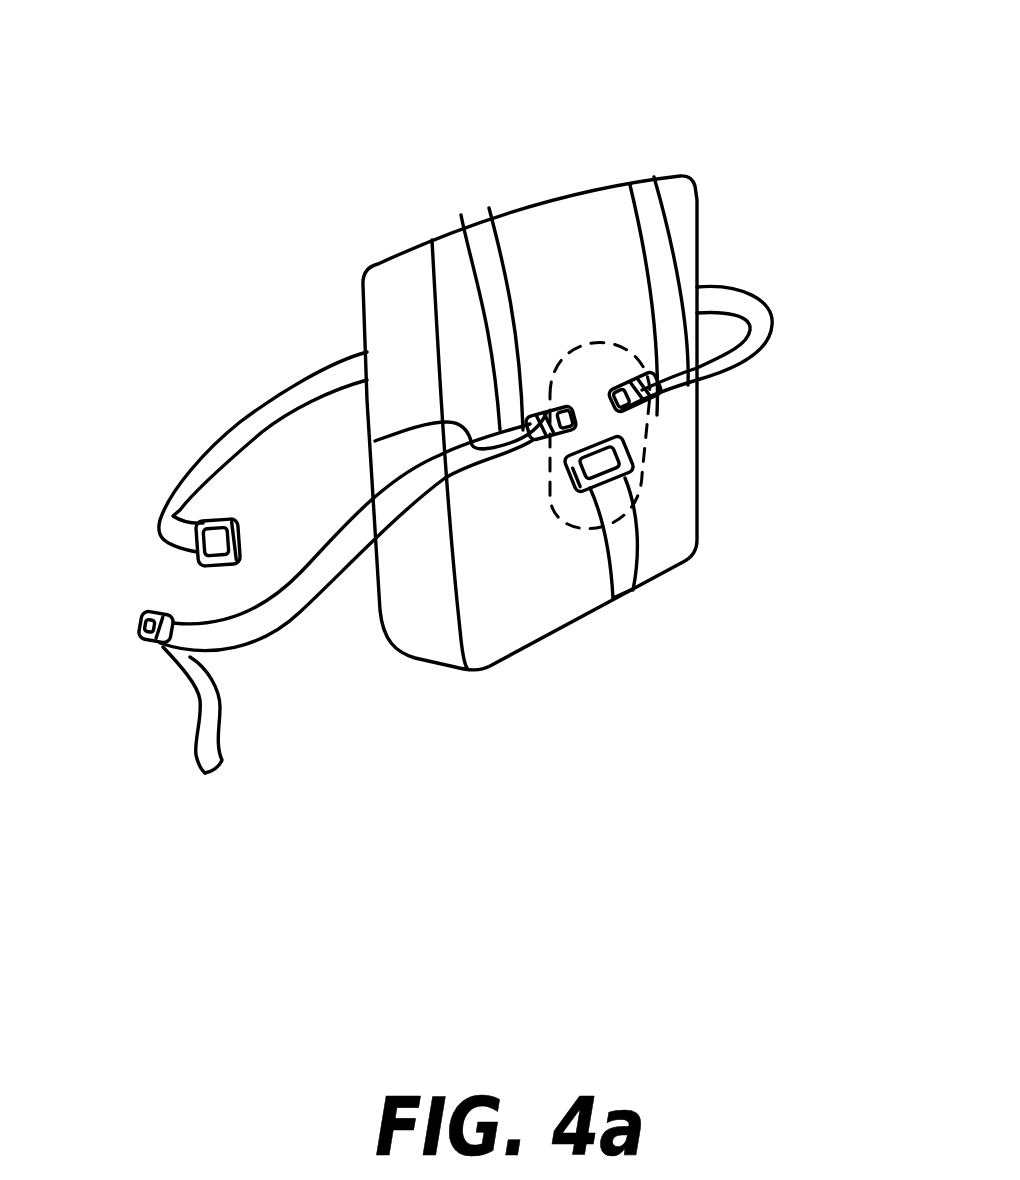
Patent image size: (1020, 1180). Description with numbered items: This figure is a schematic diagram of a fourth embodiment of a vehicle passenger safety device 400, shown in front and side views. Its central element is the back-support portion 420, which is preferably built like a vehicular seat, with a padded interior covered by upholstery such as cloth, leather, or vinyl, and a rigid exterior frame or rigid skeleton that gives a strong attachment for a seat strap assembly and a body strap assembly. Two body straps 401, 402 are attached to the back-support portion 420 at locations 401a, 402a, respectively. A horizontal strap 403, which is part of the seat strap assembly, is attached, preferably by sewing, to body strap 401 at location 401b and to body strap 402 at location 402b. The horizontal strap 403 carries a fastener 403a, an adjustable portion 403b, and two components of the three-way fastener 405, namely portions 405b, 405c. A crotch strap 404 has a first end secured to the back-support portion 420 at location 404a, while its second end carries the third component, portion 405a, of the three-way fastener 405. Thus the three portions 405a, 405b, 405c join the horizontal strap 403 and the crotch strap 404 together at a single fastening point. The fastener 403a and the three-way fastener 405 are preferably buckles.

The vehicle passenger safety device 400 is at (242, 119).
The back-support portion 420 is at (530, 200).
The body strap 401 is at (500, 268).
The location 401a is at (466, 224).
The location 401b is at (375, 442).
The body strap 402 is at (658, 222).
The location 402a is at (654, 178).
The location 402b is at (690, 378).
The horizontal strap 403 is at (204, 467).
The fastener 403a is at (143, 643).
The adjustable portion 403b is at (205, 773).
The crotch strap 404 is at (623, 520).
The location 404a is at (620, 592).
The three-way fastener 405 is at (542, 541).
The portion of three-way fastener 405a is at (632, 447).
The portion of three-way fastener 405b is at (543, 406).
The portion of three-way fastener 405c is at (630, 407).